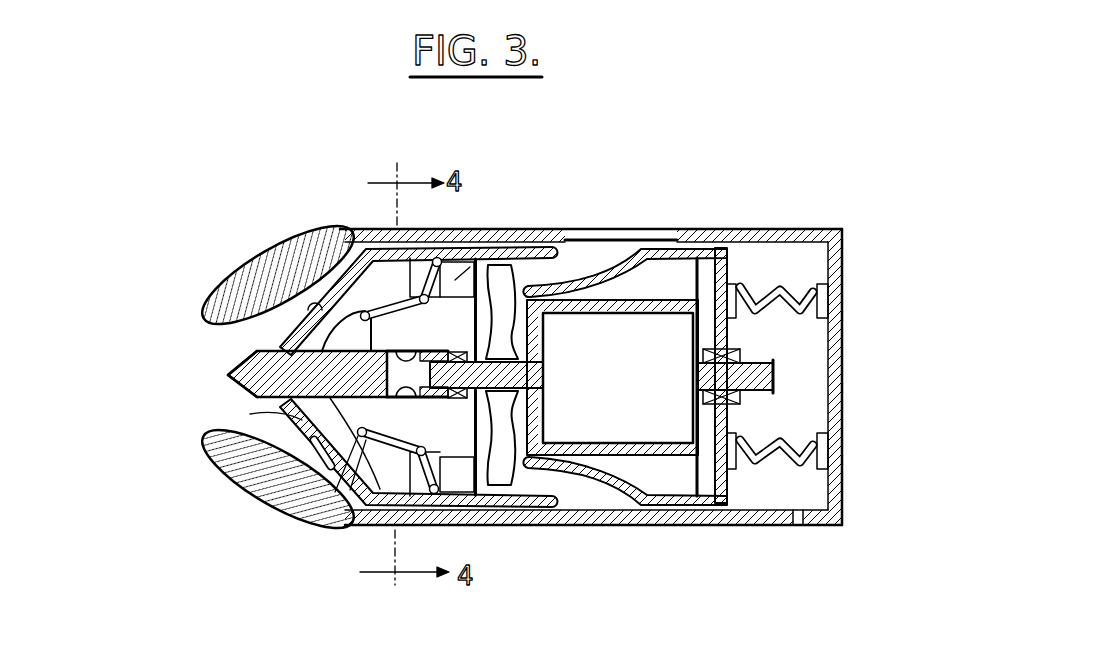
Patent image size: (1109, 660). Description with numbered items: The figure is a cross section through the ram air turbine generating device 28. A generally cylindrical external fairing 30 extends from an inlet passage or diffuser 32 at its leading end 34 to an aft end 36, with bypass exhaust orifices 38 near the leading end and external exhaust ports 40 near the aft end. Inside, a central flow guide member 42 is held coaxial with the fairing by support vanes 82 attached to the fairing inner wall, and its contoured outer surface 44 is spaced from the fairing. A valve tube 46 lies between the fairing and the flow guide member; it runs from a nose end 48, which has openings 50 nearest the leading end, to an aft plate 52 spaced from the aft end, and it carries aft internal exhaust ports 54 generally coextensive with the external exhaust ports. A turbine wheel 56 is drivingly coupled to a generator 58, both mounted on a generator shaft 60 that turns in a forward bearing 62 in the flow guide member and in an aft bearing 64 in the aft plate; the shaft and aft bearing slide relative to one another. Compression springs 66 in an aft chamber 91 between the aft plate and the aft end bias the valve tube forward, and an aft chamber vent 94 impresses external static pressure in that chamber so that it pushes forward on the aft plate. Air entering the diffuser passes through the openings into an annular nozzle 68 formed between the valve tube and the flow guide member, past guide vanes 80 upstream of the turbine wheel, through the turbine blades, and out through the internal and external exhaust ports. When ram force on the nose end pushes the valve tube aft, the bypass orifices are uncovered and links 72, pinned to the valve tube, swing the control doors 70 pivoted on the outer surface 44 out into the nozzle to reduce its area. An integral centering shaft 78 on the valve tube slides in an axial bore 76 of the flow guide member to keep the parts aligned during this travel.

The ram air turbine generating device 28 is at (666, 228).
The external fairing 30 is at (540, 532).
The inlet passage or diffuser 32 is at (234, 347).
The leading end 34 is at (207, 448).
The aft end 36 is at (845, 267).
The bypass exhaust orifices 38 is at (460, 228).
The external exhaust ports 40 is at (578, 237).
The central flow guide member 42 is at (414, 344).
The contoured outer surface 44 is at (295, 237).
The valve tube 46 is at (243, 479).
The nose end 48 is at (232, 377).
The openings 50 is at (295, 405).
The aft plate 52 is at (730, 268).
The aft internal exhaust ports 54 is at (607, 525).
The turbine wheel 56 is at (512, 322).
The generator 58 is at (624, 381).
The generator shaft 60 is at (436, 396).
The forward bearing 62 is at (457, 352).
The aft bearing 64 is at (766, 364).
The compression springs 66 is at (772, 442).
The annular nozzle 68 is at (263, 260).
The control doors 70 is at (327, 517).
The links 72 is at (424, 495).
The axial bore 76 is at (404, 396).
The centering shaft 78 is at (290, 373).
The guide vanes 80 is at (516, 244).
The support vanes 82 is at (350, 253).
The aft chamber 91 is at (798, 357).
The aft chamber vent 94 is at (801, 524).